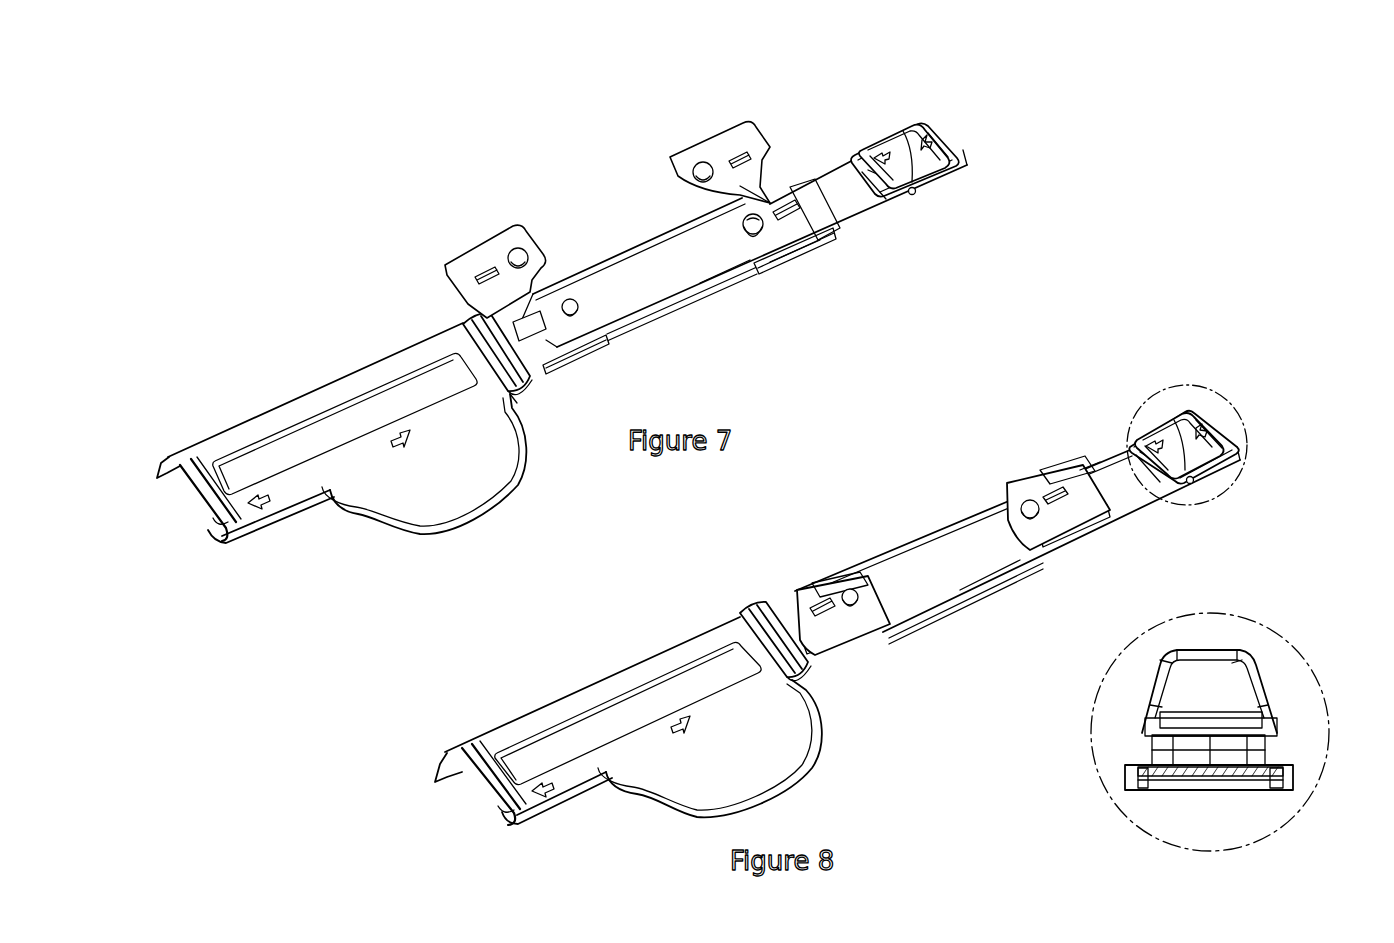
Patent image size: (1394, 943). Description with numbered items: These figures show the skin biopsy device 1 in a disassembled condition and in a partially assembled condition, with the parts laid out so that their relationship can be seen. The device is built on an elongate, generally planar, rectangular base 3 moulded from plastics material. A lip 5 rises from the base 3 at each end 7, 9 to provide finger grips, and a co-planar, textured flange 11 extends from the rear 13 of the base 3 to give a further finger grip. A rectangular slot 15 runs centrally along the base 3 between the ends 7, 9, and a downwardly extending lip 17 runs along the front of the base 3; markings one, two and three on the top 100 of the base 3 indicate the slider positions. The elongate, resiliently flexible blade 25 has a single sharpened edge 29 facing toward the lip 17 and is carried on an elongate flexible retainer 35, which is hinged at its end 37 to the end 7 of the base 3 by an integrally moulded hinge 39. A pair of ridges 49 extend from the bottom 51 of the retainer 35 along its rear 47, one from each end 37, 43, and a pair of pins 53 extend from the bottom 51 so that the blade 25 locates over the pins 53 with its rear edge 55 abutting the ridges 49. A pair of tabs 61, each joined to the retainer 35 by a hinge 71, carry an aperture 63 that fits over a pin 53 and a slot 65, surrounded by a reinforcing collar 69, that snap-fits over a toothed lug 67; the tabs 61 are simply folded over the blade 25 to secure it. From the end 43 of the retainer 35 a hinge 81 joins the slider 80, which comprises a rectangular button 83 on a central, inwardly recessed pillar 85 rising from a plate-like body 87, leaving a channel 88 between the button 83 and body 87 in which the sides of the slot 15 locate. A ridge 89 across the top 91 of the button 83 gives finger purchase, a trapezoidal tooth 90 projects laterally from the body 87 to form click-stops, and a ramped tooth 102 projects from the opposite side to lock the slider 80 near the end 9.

In FIG. 7, the skin biopsy device 1 is at (278, 316).
In FIG. 7, the base 3 is at (331, 474).
In FIG. 8, the base 3 is at (527, 803).
In FIG. 7, the lip 5 is at (186, 493).
In FIG. 8, the lip 5 is at (470, 783).
In FIG. 7, the end 7 is at (532, 400).
In FIG. 7, the end 9 is at (180, 519).
In FIG. 8, the end 9 is at (460, 812).
In FIG. 7, the flange 11 is at (492, 482).
In FIG. 8, the flange 11 is at (762, 762).
In FIG. 7, the rear 13 is at (266, 544).
In FIG. 8, the rear 13 is at (588, 830).
In FIG. 7, the slot 15 is at (300, 449).
In FIG. 8, the slot 15 is at (567, 740).
In FIG. 7, the lip 17 is at (160, 475).
In FIG. 8, the lip 17 is at (438, 768).
In FIG. 7, the blade 25 is at (653, 284).
In FIG. 8, the blade 25 is at (962, 548).
In FIG. 7, the sharpened edge 29 is at (594, 268).
In FIG. 8, the sharpened edge 29 is at (920, 540).
In FIG. 7, the retainer 35 is at (710, 302).
In FIG. 8, the retainer 35 is at (975, 598).
In FIG. 7, the end 37 is at (474, 328).
In FIG. 8, the end 37 is at (755, 600).
In FIG. 7, the hinge 39 is at (535, 388).
In FIG. 8, the hinge 39 is at (815, 672).
In FIG. 7, the end 43 is at (812, 203).
In FIG. 8, the end 43 is at (1086, 462).
In FIG. 7, the rear 47 is at (742, 289).
In FIG. 7, the ridges 49 is at (592, 358).
In FIG. 8, the ridges 49 is at (868, 641).
In FIG. 7, the bottom 51 is at (800, 232).
In FIG. 8, the bottom 51 is at (1000, 574).
In FIG. 7, the pins 53 is at (784, 206).
In FIG. 8, the pins 53 is at (822, 604).
In FIG. 7, the rear edge 55 is at (658, 305).
In FIG. 8, the rear edge 55 is at (917, 608).
In FIG. 7, the tabs 61 is at (483, 252).
In FIG. 7, the aperture 63 is at (517, 248).
In FIG. 7, the slot 65 is at (471, 266).
In FIG. 7, the toothed lug 67 is at (569, 299).
In FIG. 8, the toothed lug 67 is at (845, 589).
In FIG. 8, the reinforcing collar 69 is at (792, 612).
In FIG. 7, the hinge 71 is at (764, 172).
In FIG. 8, the hinge 71 is at (802, 583).
In FIG. 8, the slider 80 is at (1236, 386).
In FIG. 7, the hinge 81 is at (836, 210).
In FIG. 7, the button 83 is at (956, 170).
In FIG. 8, the button 83 is at (1240, 452).
In FIG. 7, the pillar 85 is at (875, 194).
In FIG. 8, the pillar 85 is at (1150, 482).
In FIG. 7, the body 87 is at (942, 184).
In FIG. 8, the body 87 is at (1230, 464).
In FIG. 8, the channel 88 is at (1280, 750).
In FIG. 7, the ridge 89 is at (905, 128).
In FIG. 8, the ridge 89 is at (1177, 410).
In FIG. 7, the tooth 90 is at (917, 194).
In FIG. 8, the tooth 90 is at (1193, 481).
In FIG. 7, the top 91 is at (943, 157).
In FIG. 8, the top 91 is at (1226, 436).
In FIG. 7, the top 100 is at (345, 384).
In FIG. 8, the top 100 is at (587, 697).
In FIG. 8, the ramped tooth 102 is at (1126, 781).